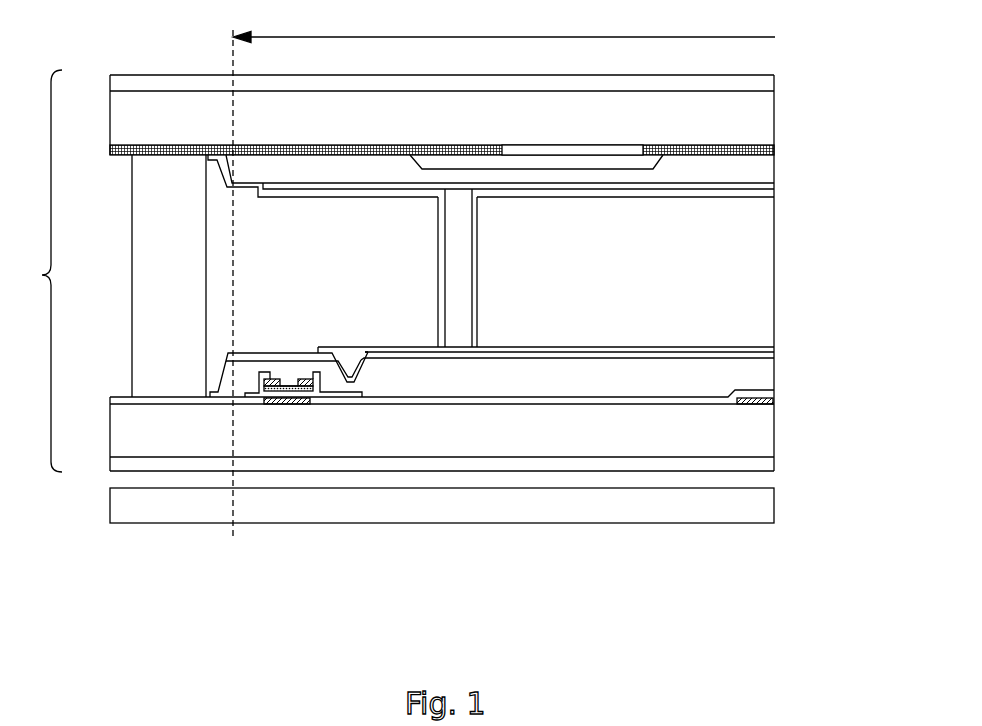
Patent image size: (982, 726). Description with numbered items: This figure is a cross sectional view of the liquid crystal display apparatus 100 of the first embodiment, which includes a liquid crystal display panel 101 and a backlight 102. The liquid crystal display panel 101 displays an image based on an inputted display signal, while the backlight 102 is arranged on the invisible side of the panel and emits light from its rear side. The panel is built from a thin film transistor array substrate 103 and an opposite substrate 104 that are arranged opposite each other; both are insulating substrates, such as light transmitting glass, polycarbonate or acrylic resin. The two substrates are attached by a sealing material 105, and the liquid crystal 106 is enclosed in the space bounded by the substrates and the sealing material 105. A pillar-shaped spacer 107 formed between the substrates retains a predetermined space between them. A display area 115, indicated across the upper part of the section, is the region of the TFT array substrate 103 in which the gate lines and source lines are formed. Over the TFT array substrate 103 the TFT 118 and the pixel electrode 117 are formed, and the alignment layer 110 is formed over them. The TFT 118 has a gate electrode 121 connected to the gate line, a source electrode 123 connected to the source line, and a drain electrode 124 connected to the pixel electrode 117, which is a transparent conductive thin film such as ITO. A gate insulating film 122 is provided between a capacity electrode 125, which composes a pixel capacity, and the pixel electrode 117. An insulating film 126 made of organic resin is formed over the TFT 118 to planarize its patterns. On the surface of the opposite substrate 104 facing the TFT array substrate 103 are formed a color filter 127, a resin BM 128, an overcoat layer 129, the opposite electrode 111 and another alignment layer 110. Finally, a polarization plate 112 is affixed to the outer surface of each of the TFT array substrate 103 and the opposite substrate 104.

The liquid crystal display apparatus 100 is at (756, 600).
The liquid crystal display panel 101 is at (35, 271).
The backlight 102 is at (774, 505).
The thin film transistor array substrate 103 is at (769, 433).
The opposite substrate 104 is at (774, 114).
The sealing material 105 is at (145, 233).
The liquid crystal 106 is at (769, 275).
The pillar-shaped spacer 107 is at (455, 247).
The alignment layer 110 is at (774, 194).
The opposite electrode 111 is at (774, 187).
The polarization plate 112 is at (774, 80).
The display area 115 is at (504, 273).
The pixel electrode 117 is at (774, 358).
The TFT 118 is at (305, 428).
The gate electrode 121 is at (284, 406).
The gate insulating film 122 is at (330, 400).
The source electrode 123 is at (272, 378).
The drain electrode 124 is at (306, 378).
The capacity electrode 125 is at (774, 400).
The insulating film 126 is at (769, 373).
The color filter 127 is at (590, 165).
The resin BM 128 is at (774, 146).
The overcoat layer 129 is at (774, 171).